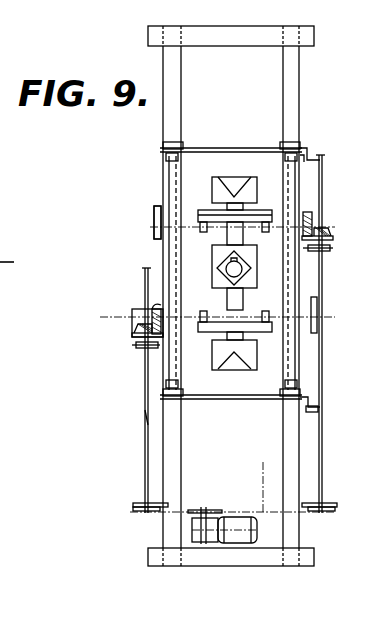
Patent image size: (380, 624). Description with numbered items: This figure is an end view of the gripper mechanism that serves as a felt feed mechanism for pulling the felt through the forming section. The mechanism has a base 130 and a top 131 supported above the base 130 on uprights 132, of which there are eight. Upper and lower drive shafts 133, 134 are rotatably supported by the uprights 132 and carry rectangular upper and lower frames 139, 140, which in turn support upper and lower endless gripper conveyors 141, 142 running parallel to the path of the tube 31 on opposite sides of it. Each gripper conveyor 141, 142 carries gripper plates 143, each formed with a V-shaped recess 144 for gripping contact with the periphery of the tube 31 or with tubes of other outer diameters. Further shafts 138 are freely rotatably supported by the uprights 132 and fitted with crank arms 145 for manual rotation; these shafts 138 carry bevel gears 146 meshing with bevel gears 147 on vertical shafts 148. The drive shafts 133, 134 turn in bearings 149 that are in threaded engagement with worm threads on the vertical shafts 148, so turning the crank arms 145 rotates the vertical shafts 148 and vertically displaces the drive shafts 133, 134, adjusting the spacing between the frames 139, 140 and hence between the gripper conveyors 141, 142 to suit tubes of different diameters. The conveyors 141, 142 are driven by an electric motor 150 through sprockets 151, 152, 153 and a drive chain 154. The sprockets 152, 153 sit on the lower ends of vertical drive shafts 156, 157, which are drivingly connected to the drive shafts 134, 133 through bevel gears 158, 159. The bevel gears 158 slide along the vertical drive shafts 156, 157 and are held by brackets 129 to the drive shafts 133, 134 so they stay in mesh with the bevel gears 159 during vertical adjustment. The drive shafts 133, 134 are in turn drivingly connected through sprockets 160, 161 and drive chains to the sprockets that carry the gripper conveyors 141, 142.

The tube 31 is at (252, 273).
The brackets 129 is at (147, 349).
The base 130 is at (250, 556).
The top 131 is at (237, 32).
The uprights 132 is at (166, 52).
The upper drive shaft 133 is at (108, 214).
The lower drive shaft 134 is at (133, 316).
The further shafts 138 is at (216, 147).
The upper frame 139 is at (265, 221).
The lower frame 140 is at (272, 328).
The upper gripper conveyor 141 is at (228, 232).
The lower gripper conveyor 142 is at (227, 300).
The gripper plates 143 is at (213, 187).
The V-shaped recess 144 is at (248, 160).
The crank arms 145 is at (306, 153).
The bevel gears 146 is at (175, 146).
The bevel gears 147 is at (170, 156).
The vertical shafts 148 is at (175, 180).
The bearings 149 is at (158, 211).
The electric motor 150 is at (233, 540).
The sprocket 151 is at (204, 507).
The sprocket 152 is at (135, 509).
The sprocket 153 is at (323, 509).
The drive chain 154 is at (264, 446).
The vertical drive shaft 156 is at (145, 419).
The vertical drive shaft 157 is at (323, 370).
The bevel gears 158 is at (135, 326).
The bevel gears 159 is at (152, 313).
The sprocket 160 is at (318, 303).
The sprocket 161 is at (154, 227).